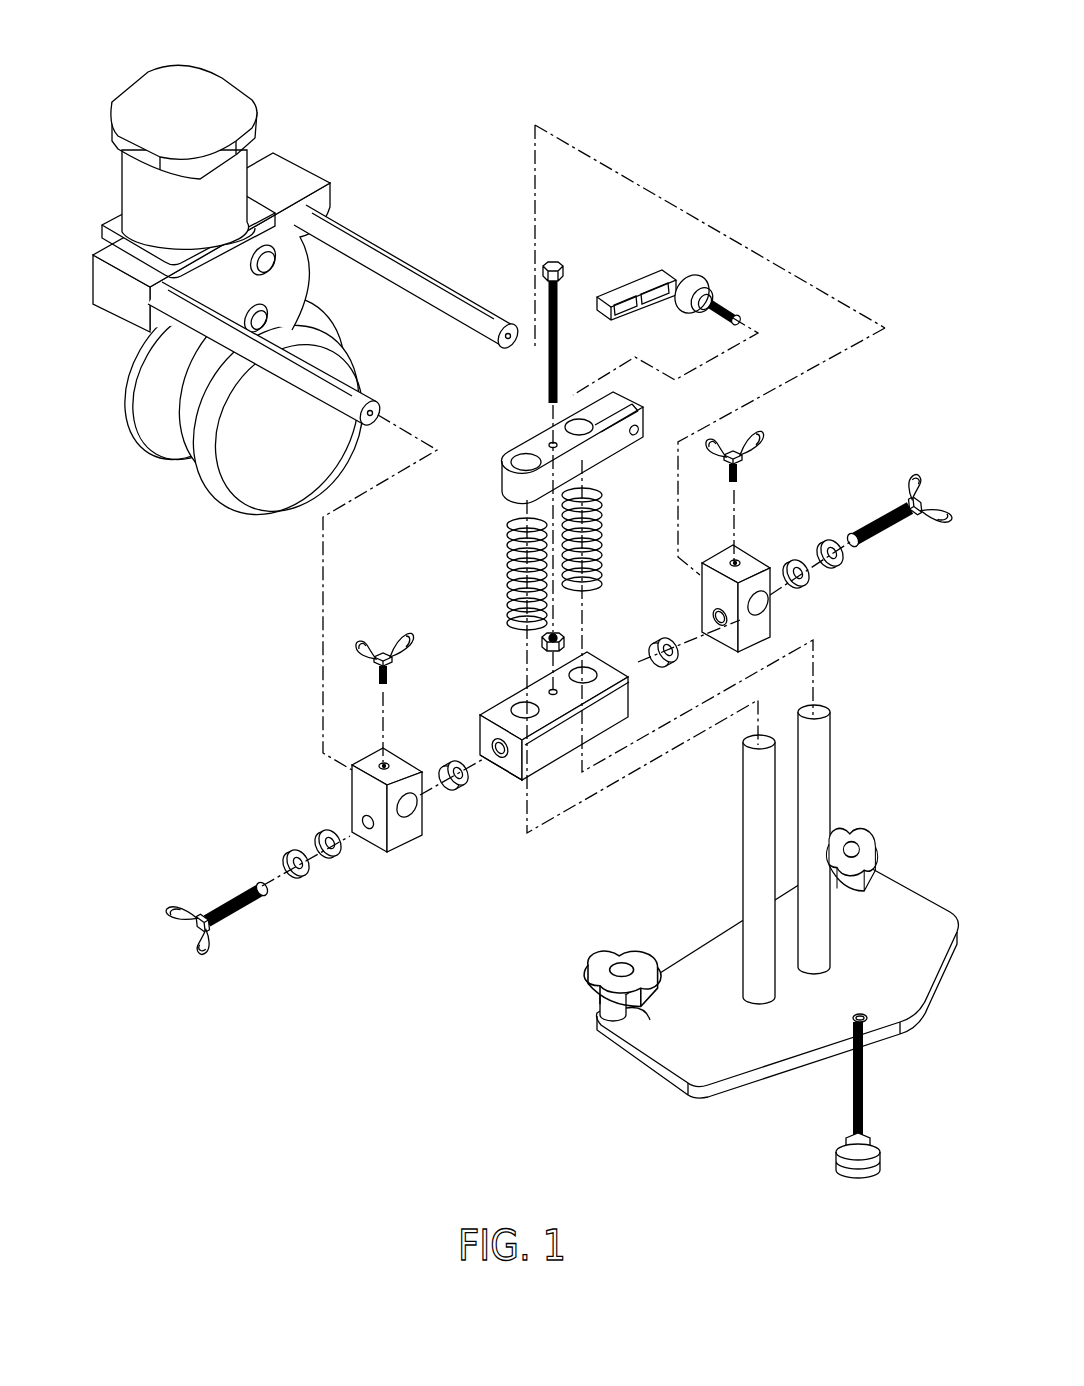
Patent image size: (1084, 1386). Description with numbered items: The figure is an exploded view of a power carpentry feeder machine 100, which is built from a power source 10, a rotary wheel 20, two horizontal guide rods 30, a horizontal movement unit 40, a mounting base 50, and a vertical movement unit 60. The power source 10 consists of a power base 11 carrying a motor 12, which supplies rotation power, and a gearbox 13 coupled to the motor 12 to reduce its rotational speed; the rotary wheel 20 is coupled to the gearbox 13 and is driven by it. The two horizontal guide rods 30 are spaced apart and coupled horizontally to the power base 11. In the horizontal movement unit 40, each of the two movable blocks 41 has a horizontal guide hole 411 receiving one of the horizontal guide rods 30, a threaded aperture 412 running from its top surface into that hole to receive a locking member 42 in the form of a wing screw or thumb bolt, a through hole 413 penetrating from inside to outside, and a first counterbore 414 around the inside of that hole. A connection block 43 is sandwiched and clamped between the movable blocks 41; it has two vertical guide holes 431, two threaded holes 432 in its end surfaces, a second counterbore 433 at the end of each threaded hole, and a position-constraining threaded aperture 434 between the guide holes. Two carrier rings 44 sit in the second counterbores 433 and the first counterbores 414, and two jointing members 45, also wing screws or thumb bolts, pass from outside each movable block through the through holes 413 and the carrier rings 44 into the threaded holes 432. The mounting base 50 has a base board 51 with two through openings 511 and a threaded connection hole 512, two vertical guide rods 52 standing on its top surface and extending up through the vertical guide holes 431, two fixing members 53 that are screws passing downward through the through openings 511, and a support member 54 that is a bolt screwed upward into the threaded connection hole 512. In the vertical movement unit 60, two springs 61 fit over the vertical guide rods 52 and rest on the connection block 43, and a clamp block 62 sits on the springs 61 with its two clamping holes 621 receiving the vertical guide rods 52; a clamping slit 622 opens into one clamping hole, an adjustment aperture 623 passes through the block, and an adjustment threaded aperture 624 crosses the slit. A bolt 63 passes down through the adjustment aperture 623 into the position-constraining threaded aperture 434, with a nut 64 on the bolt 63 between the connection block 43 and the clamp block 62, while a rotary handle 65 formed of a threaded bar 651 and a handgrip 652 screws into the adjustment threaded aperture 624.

The power carpentry feeder machine 100 is at (498, 605).
The power source 10 is at (215, 316).
The power base 11 is at (110, 290).
The motor 12 is at (163, 157).
The gearbox 13 is at (145, 385).
The rotary wheel 20 is at (208, 500).
The horizontal guide rods 30 is at (440, 290).
The horizontal movement unit 40 is at (546, 692).
The movable blocks 41 is at (563, 664).
The horizontal guide hole 411 is at (762, 602).
The threaded aperture 412 is at (740, 560).
The through hole 413 is at (722, 617).
The first counterbore 414 is at (716, 622).
The locking members 42 is at (382, 650).
The connection block 43 is at (536, 733).
The vertical guide holes 431 is at (586, 668).
The threaded holes 432 is at (490, 745).
The second counterbore 433 is at (500, 765).
The position-constraining threaded aperture 434 is at (560, 694).
The carrier rings 44 is at (456, 788).
The jointing members 45 is at (238, 908).
The mounting base 50 is at (739, 956).
The base board 51 is at (778, 986).
The through openings 511 is at (645, 1015).
The threaded connection hole 512 is at (870, 1022).
The vertical guide rods 52 is at (823, 757).
The fixing members 53 is at (868, 848).
The support member 54 is at (866, 1112).
The vertical movement unit 60 is at (644, 382).
The springs 61 is at (600, 525).
The clamp block 62 is at (572, 418).
The clamping holes 621 is at (510, 456).
The clamping slit 622 is at (628, 410).
The adjustment aperture 623 is at (551, 441).
The adjustment threaded aperture 624 is at (640, 428).
The bolt 63 is at (560, 312).
The nut 64 is at (565, 640).
The rotary handle 65 is at (710, 257).
The threaded bar 651 is at (732, 305).
The handgrip 652 is at (698, 285).